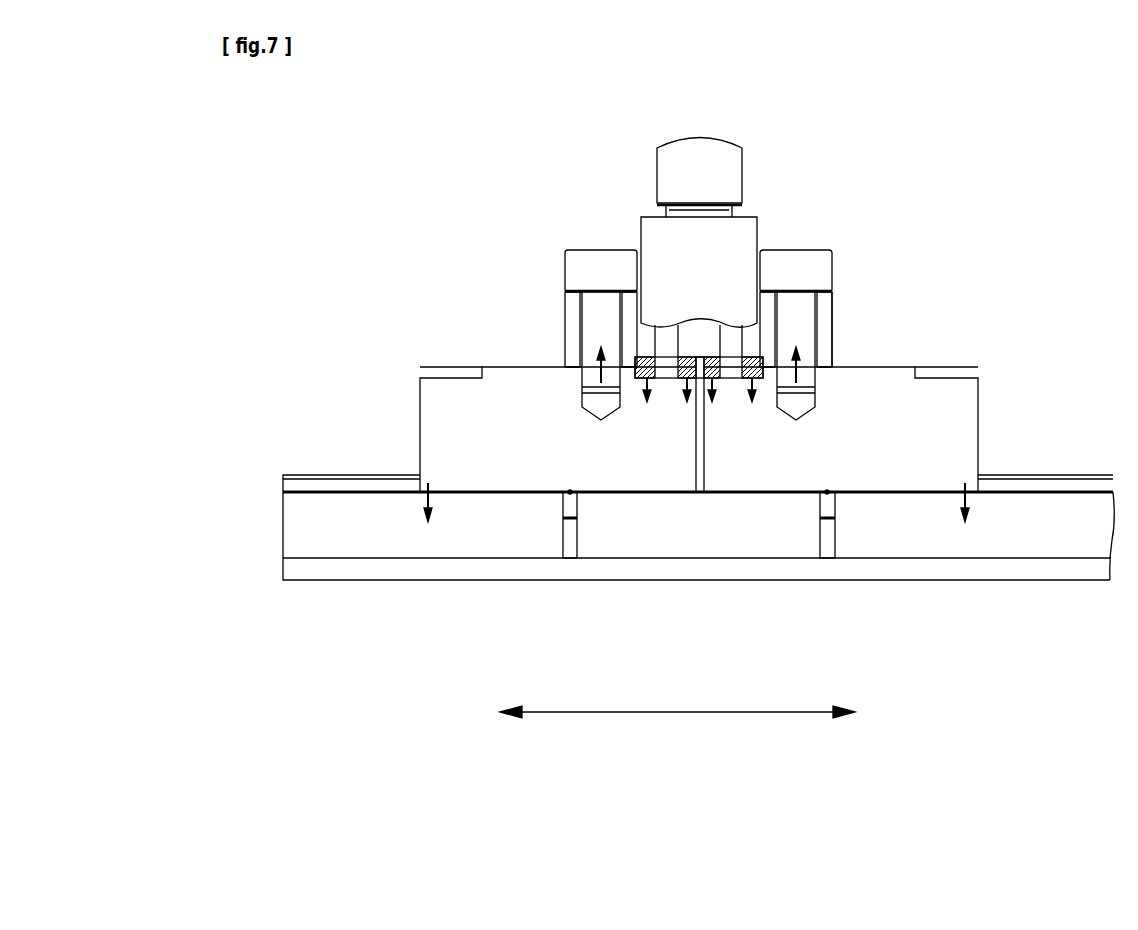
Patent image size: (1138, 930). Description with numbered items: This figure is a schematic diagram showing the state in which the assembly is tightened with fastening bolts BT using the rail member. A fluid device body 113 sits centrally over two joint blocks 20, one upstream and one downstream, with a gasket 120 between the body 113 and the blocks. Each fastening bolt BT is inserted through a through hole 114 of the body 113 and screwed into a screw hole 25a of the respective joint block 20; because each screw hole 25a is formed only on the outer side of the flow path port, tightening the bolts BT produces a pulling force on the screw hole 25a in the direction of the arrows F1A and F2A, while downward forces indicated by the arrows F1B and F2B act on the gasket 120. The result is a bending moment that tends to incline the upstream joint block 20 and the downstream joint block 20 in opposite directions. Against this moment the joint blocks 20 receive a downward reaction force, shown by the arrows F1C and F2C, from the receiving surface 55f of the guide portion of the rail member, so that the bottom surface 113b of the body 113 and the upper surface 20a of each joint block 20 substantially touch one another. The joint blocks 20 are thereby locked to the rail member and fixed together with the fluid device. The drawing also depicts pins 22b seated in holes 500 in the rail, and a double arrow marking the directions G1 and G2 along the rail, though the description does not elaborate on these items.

The fastening bolt BT is at (617, 268).
The gasket 120 is at (628, 325).
The through hole 114 is at (565, 295).
The body 113 is at (832, 315).
The bottom surface 113b is at (631, 368).
The joint block 20 is at (518, 467).
The upper surface 20a is at (503, 365).
The receiving surface 55f is at (330, 485).
The screw hole 25a is at (578, 400).
The positioning pin 22b is at (808, 493).
The pin hole 500 is at (825, 542).
The arrow F1A is at (597, 367).
The arrow F1B is at (675, 366).
The arrow F1C is at (423, 507).
The arrow F2A is at (800, 390).
The arrow F2B is at (740, 365).
The arrow F2C is at (970, 505).
The direction G1 is at (577, 698).
The direction G2 is at (786, 697).